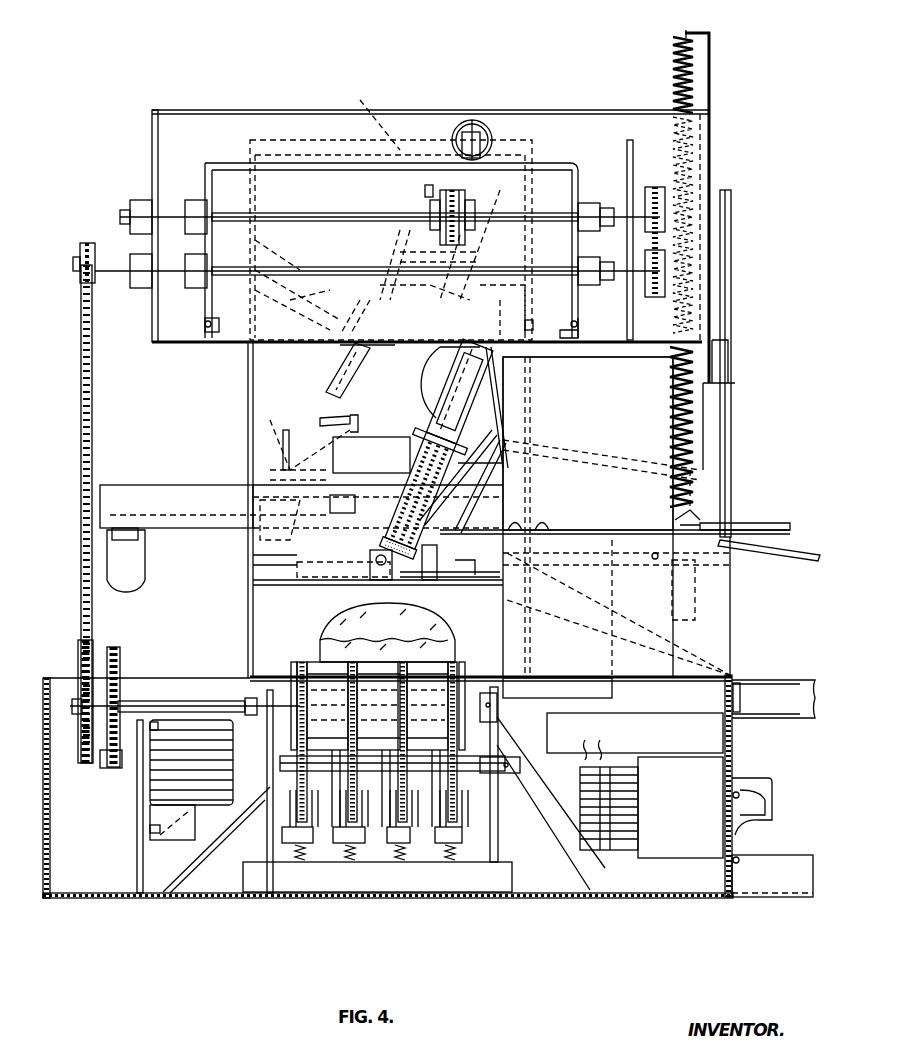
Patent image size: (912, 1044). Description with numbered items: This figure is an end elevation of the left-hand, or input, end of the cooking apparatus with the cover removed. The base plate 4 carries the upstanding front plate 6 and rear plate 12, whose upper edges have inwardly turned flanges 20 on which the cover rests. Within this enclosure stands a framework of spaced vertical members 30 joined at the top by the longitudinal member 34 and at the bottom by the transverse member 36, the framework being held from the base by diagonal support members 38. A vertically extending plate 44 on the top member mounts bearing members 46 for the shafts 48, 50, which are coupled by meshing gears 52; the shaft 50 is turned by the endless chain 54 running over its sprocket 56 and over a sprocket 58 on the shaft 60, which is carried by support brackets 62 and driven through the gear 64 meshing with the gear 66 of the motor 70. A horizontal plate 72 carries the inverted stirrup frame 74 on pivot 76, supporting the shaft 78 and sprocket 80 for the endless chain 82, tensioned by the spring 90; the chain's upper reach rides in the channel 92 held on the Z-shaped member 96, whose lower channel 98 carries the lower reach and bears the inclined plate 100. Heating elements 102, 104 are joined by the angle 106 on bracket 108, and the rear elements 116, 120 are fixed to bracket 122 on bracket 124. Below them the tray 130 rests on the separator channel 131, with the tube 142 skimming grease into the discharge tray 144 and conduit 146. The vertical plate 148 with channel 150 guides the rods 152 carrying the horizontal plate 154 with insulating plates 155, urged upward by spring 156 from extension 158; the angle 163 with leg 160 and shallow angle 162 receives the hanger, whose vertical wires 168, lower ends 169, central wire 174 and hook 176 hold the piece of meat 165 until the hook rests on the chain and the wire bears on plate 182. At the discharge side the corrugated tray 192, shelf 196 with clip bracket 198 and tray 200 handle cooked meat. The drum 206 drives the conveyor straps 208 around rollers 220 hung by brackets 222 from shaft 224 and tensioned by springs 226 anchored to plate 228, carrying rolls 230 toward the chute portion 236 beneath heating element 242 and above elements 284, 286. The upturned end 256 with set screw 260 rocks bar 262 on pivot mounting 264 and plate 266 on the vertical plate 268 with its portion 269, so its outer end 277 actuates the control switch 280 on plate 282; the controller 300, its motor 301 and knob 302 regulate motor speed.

The base plate 4 is at (515, 895).
The front plate 6 is at (735, 730).
The rear plate 12 is at (50, 812).
The inwardly turned flanges 20 is at (70, 676).
The vertical frame members 30 is at (248, 416).
The longitudinally extending top member 34 is at (372, 115).
The transversely extending member 36 is at (548, 718).
The diagonal support members 38 is at (230, 830).
The vertically extending plate 44 is at (558, 110).
The bearing members 46 is at (152, 150).
The upper shaft 48 is at (120, 215).
The lower shaft 50 is at (115, 266).
The meshing gears 52 is at (675, 255).
The endless chain 54 is at (81, 392).
The sprocket 56 is at (78, 264).
The sprocket 58 is at (78, 650).
The drive shaft 60 is at (183, 700).
The support brackets 62 is at (267, 830).
The gear 64 is at (120, 665).
The motor gear 66 is at (110, 770).
The motor 70 is at (228, 768).
The horizontal plate 72 is at (282, 345).
The inverted stirrup frame 74 is at (545, 175).
The pivot 76 is at (205, 324).
The rotatable shaft 78 is at (366, 210).
The sprocket 80 is at (466, 198).
The endless chain 82 is at (452, 190).
The spring 90 is at (468, 120).
The channel 92 is at (480, 240).
The Z-shaped member 96 is at (425, 188).
The channel 98 is at (404, 252).
The inclined plate 100 is at (478, 262).
The upper heating element 102 is at (528, 303).
The lower heating element 104 is at (440, 445).
The angle 106 is at (440, 392).
The bracket 108 is at (505, 370).
The heating element 116 is at (372, 262).
The heating element 120 is at (345, 358).
The bracket 122 is at (378, 310).
The bracket 124 is at (310, 318).
The tray 130 is at (340, 450).
The channel 131 is at (270, 470).
The tube 142 is at (400, 450).
The discharge tray 144 is at (215, 495).
The conduit 146 is at (148, 572).
The vertical plate 148 is at (711, 150).
The channel 150 is at (712, 340).
The vertical rods 152 is at (731, 208).
The horizontal plate 154 is at (628, 530).
The insulating plates 155 is at (745, 522).
The spring 156 is at (670, 435).
The extension 158 is at (712, 68).
The upwardly extending leg 160 is at (462, 496).
The shallow angle member 162 is at (510, 478).
The angle 163 is at (520, 525).
The piece of meat 165 is at (366, 413).
The vertical wires 168 is at (458, 477).
The lower wire ends 169 is at (354, 504).
The central horizontal wire 174 is at (472, 295).
The hook 176 is at (438, 340).
The plate 182 is at (544, 324).
The corrugated tray 192 is at (732, 655).
The shelf 196 is at (775, 680).
The clip bracket 198 is at (742, 700).
The tray 200 is at (800, 714).
The drum 206 is at (315, 665).
The conveyor straps 208 is at (440, 645).
The rollers 220 is at (410, 860).
The brackets 222 is at (300, 850).
The shaft 224 is at (508, 777).
The springs 226 is at (338, 820).
The plate 228 is at (255, 892).
The rolls 230 is at (478, 580).
The horizontal chute portion 236 is at (778, 890).
The heating element 242 is at (258, 545).
The upturned bar end 256 is at (355, 585).
The set screw 260 is at (343, 559).
The pivoted bar 262 is at (495, 575).
The pivot mounting 264 is at (428, 582).
The horizontal plate 266 is at (376, 577).
The vertical plate 268 is at (262, 560).
The longitudinal portion 269 is at (302, 436).
The outermost bar end 277 is at (692, 586).
The control switch 280 is at (699, 497).
The plate 282 is at (640, 675).
The lower heating element 284 is at (525, 648).
The lower heating element 286 is at (297, 668).
The interrupter type controller 300 is at (684, 845).
The controller motor 301 is at (600, 845).
The knob or pointer 302 is at (772, 812).